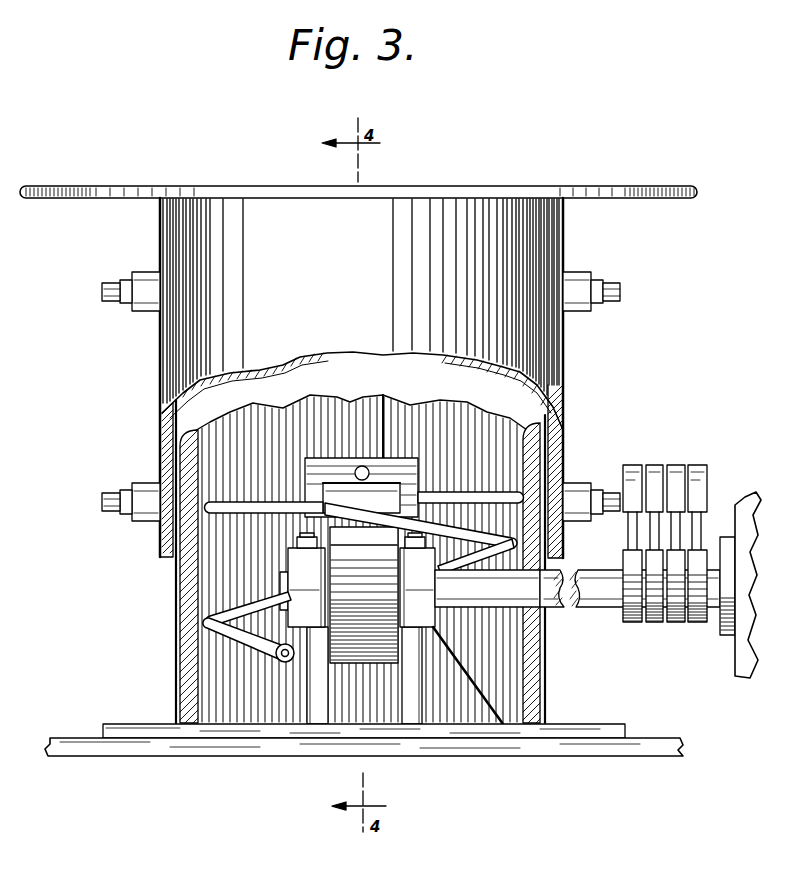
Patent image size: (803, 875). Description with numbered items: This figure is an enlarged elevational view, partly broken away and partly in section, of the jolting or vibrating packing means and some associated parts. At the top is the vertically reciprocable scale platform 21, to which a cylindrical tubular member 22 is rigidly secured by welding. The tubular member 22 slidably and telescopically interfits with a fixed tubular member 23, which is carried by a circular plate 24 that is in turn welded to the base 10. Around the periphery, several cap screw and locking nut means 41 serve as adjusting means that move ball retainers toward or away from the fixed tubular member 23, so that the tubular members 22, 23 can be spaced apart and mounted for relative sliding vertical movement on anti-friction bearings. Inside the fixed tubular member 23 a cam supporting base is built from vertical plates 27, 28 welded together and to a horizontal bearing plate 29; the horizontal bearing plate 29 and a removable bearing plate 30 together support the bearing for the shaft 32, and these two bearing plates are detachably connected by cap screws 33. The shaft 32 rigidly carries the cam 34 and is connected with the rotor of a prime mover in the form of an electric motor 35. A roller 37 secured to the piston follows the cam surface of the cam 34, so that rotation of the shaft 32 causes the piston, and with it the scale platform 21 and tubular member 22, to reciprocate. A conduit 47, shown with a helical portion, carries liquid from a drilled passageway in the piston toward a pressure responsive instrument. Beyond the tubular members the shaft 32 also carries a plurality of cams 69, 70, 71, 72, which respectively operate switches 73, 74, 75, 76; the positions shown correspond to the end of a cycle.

The base 10 is at (160, 748).
The scale platform 21 is at (440, 187).
The cylindrical tubular member 22 is at (160, 234).
The fixed tubular member 23 is at (440, 396).
The circular plate 24 is at (595, 724).
The vertical plate 27 is at (305, 481).
The vertical plate 28 is at (445, 649).
The horizontal bearing plate 29 is at (434, 614).
The removable bearing plate 30 is at (288, 560).
The shaft 32 is at (503, 607).
The cap screws 33 is at (300, 537).
The cam 34 is at (381, 665).
The electric motor 35 is at (743, 497).
The roller 37 is at (323, 496).
The cap screw and locking nut means 41 is at (140, 320).
The conduit 47 is at (470, 492).
The cam 69 is at (634, 626).
The cam 70 is at (655, 626).
The cam 71 is at (676, 626).
The cam 72 is at (698, 626).
The switch 73 is at (628, 468).
The switch 74 is at (654, 468).
The switch 75 is at (676, 468).
The switch 76 is at (698, 468).